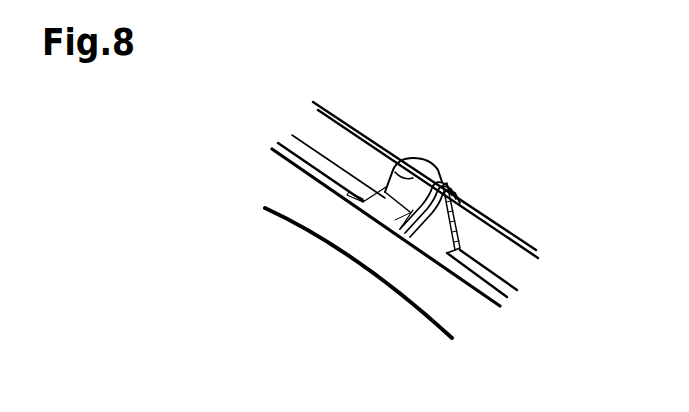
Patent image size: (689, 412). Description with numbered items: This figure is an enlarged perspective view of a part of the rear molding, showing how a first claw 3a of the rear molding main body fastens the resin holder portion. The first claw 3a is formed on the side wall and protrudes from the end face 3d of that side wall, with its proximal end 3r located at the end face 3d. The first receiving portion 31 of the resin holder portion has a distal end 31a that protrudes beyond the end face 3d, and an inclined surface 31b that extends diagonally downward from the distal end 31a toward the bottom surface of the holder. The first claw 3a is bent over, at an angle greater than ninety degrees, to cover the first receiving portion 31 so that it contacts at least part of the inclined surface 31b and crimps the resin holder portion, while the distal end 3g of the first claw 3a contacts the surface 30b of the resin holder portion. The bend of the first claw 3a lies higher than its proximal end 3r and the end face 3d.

The first claw 3a is at (387, 170).
The end face 3d is at (392, 160).
The distal end 3g is at (410, 210).
The proximal end 3r is at (450, 182).
The surface 30b is at (388, 211).
The first receiving portion 31 is at (455, 200).
The distal end 31a is at (440, 186).
The inclined surface 31b is at (422, 178).